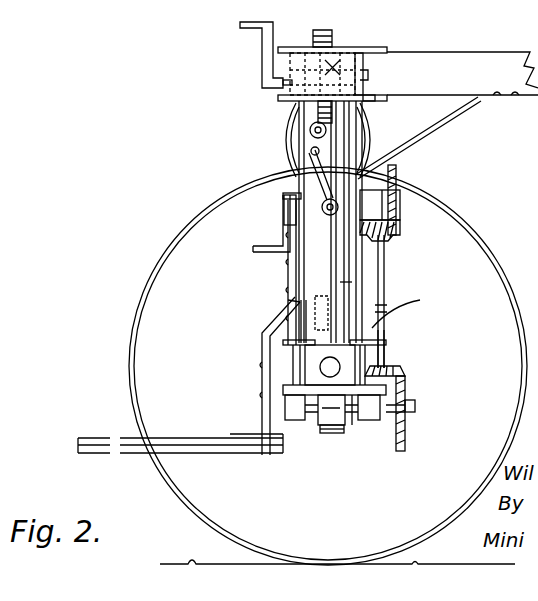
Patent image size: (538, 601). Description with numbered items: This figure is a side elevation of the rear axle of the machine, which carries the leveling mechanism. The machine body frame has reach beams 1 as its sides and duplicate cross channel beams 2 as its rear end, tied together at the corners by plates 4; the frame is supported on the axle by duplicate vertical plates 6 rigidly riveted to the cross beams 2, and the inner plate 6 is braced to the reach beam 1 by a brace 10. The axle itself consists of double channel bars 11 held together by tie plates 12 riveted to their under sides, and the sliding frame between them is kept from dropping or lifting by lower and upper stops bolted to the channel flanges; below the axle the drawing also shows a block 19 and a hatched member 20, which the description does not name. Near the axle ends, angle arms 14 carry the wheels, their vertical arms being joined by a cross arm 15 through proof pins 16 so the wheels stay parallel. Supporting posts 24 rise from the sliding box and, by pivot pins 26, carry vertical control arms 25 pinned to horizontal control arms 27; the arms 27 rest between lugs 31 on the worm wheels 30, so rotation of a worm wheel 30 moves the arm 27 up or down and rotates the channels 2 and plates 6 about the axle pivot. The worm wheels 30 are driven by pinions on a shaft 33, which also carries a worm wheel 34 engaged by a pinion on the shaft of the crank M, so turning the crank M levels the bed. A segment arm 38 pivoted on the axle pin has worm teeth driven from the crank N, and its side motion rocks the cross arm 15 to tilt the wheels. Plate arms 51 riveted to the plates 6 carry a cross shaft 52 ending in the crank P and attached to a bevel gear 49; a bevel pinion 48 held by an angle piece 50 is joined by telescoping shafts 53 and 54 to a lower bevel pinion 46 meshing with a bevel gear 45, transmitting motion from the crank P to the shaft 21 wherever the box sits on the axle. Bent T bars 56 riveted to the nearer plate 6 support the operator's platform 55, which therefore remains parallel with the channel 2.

The crank M is at (253, 54).
The worm wheel 30 is at (323, 30).
The cross channel beam 2 is at (292, 49).
The lug 31 is at (363, 50).
The horizontal control arm 27 is at (364, 74).
The reach beam 1 is at (462, 73).
The plate 4 is at (372, 101).
The brace 10 is at (456, 111).
The shaft 33 is at (300, 131).
The worm wheel 34 is at (367, 136).
The crank N is at (298, 155).
The vertical plate 6 is at (298, 160).
The bevel gear 49 is at (397, 170).
The angle piece 50 is at (401, 209).
The plate arm 51 is at (285, 210).
The cross shaft 52 is at (283, 197).
The segment arm 38 is at (330, 226).
The crank P is at (253, 249).
The bevel pinion 48 is at (392, 236).
The shaft 53 is at (385, 264).
The shaft 54 is at (386, 334).
The bent T bar 56 is at (288, 270).
The cross arm 15 is at (322, 296).
The vertical control arm 25 is at (346, 281).
The proof pin 16 is at (292, 300).
The angle arm 14 is at (304, 318).
The pivot pin 26 is at (398, 302).
The channel bar 11 is at (293, 350).
The supporting post 24 is at (338, 363).
The bevel pinion 46 is at (403, 370).
The bevel gear 45 is at (406, 381).
The shaft 21 is at (416, 406).
The block 19 is at (318, 416).
The hatched block 20 is at (332, 434).
The tie plate 12 is at (353, 426).
The platform 55 is at (112, 438).